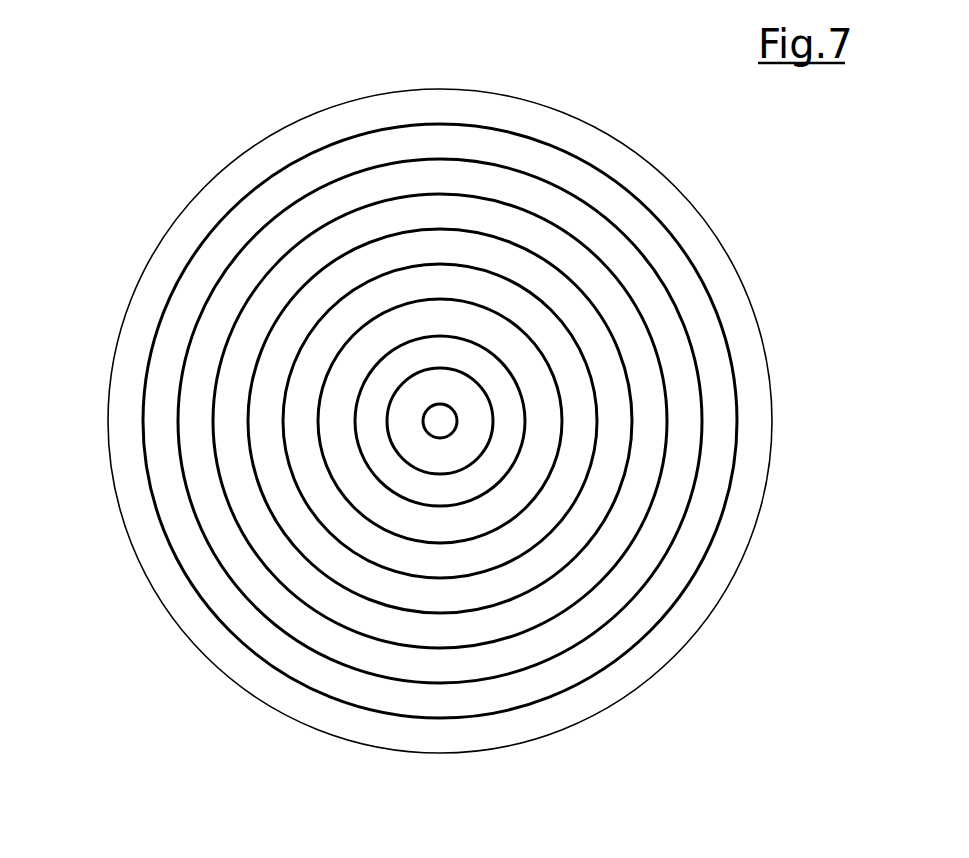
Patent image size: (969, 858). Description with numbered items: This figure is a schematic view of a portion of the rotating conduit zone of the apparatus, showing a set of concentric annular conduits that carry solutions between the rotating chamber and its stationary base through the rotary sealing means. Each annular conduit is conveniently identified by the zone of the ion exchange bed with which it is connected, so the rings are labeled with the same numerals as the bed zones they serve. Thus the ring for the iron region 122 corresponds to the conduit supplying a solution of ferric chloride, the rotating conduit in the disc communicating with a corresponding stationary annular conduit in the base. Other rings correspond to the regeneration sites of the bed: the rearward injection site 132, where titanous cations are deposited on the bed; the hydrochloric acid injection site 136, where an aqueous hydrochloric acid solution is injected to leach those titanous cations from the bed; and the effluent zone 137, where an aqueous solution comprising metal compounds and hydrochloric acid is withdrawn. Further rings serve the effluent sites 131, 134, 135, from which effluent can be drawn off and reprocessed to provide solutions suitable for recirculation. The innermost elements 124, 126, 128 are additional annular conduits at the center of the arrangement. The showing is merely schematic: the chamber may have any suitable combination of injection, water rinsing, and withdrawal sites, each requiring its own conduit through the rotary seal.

The iron region 122 is at (385, 555).
The central region 124 is at (452, 383).
The inner annular zone 126 is at (488, 362).
The center hole 128 is at (440, 421).
The effluent site 131 is at (318, 637).
The rearward injection site 132 is at (478, 515).
The effluent site 134 is at (398, 700).
The effluent site 135 is at (467, 735).
The hydrochloric acid injection site 136 is at (303, 535).
The effluent zone 137 is at (305, 585).